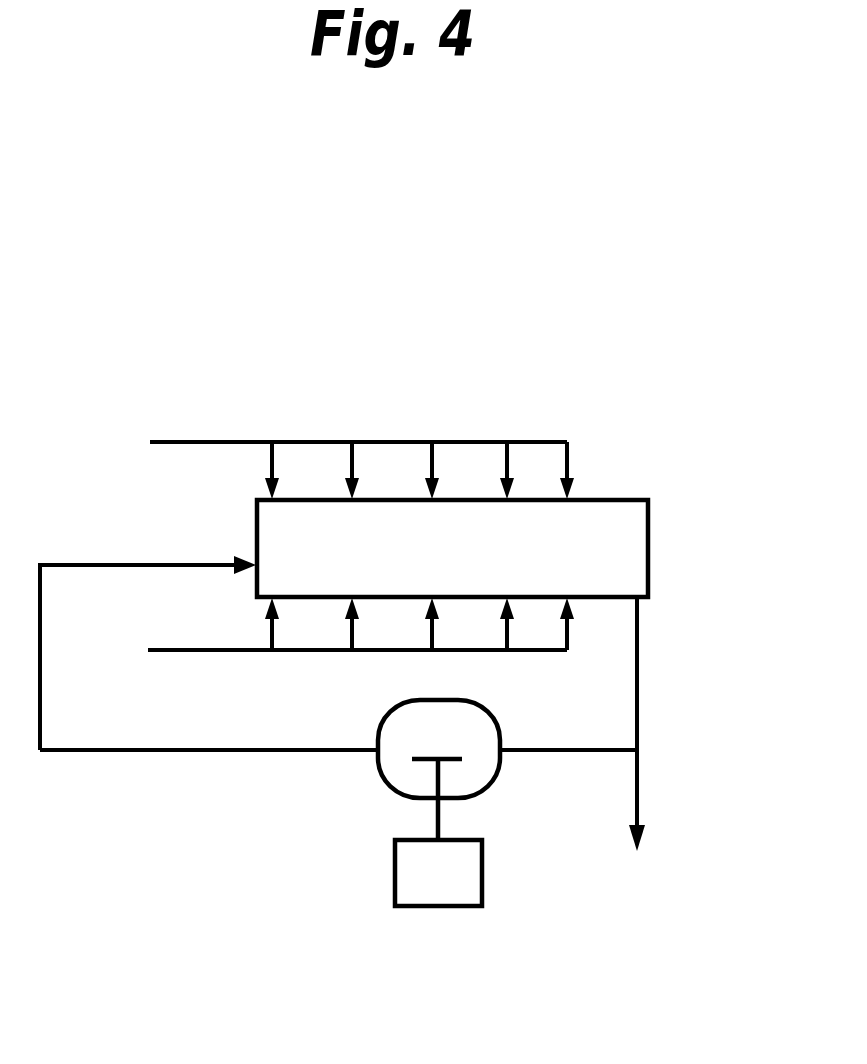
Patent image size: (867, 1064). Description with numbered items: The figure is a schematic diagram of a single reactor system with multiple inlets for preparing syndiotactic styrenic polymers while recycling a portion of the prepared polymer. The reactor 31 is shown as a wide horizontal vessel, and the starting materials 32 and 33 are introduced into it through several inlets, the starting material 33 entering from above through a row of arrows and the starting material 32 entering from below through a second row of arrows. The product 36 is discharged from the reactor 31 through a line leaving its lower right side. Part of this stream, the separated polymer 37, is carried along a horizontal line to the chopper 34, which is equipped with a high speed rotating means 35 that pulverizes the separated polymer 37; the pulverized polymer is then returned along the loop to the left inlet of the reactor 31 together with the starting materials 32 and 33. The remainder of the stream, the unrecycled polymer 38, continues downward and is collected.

The reactor 31 is at (583, 511).
The starting material 32 is at (333, 633).
The starting material 33 is at (338, 458).
The chopper 34 is at (380, 775).
The high speed rotating means 35 is at (403, 868).
The product 36 is at (627, 648).
The separated polymer 37 is at (338, 653).
The unrecycled polymer 38 is at (638, 795).